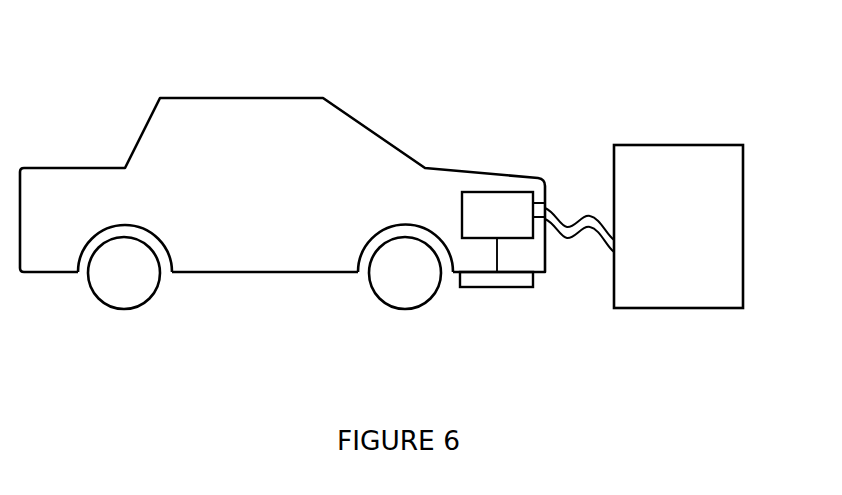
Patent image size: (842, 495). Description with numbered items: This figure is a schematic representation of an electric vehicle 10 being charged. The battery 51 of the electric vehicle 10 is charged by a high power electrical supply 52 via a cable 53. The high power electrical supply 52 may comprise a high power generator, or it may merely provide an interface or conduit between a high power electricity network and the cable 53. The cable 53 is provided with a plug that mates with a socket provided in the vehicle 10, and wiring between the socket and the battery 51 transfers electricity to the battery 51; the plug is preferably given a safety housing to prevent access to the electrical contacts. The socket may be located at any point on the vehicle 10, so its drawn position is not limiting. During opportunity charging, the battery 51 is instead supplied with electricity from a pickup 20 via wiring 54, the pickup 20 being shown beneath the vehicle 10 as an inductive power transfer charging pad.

The electric vehicle 10 is at (370, 122).
The battery 51 is at (487, 192).
The cable 53 is at (557, 205).
The high power electrical supply 52 is at (672, 133).
The pickup 20 is at (470, 287).
The wiring 54 is at (498, 247).